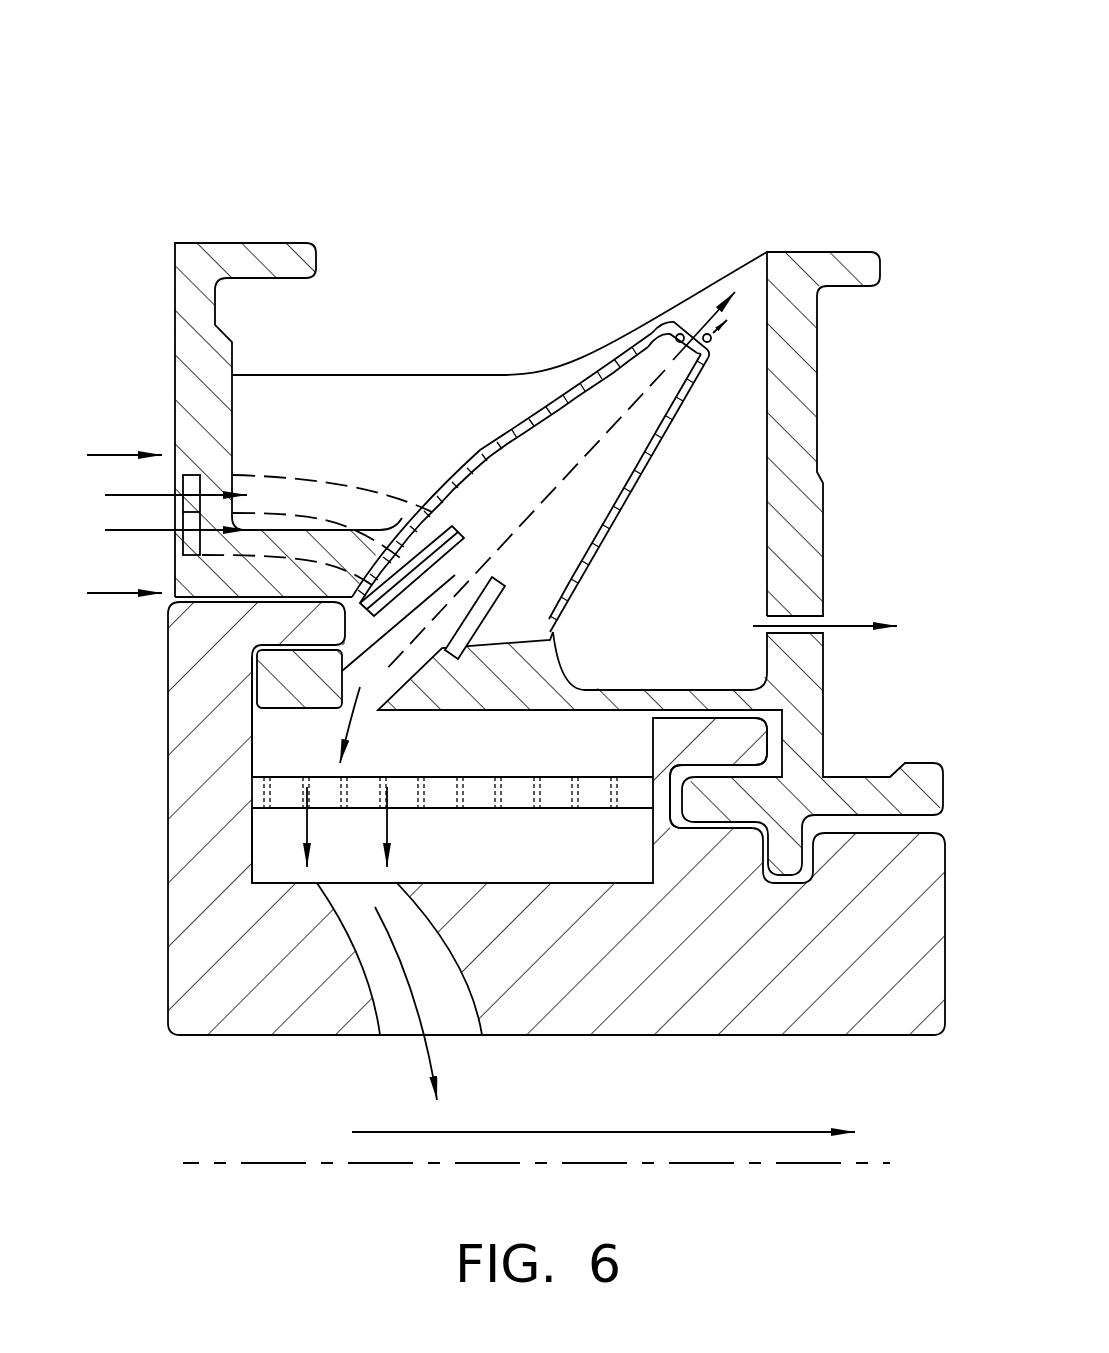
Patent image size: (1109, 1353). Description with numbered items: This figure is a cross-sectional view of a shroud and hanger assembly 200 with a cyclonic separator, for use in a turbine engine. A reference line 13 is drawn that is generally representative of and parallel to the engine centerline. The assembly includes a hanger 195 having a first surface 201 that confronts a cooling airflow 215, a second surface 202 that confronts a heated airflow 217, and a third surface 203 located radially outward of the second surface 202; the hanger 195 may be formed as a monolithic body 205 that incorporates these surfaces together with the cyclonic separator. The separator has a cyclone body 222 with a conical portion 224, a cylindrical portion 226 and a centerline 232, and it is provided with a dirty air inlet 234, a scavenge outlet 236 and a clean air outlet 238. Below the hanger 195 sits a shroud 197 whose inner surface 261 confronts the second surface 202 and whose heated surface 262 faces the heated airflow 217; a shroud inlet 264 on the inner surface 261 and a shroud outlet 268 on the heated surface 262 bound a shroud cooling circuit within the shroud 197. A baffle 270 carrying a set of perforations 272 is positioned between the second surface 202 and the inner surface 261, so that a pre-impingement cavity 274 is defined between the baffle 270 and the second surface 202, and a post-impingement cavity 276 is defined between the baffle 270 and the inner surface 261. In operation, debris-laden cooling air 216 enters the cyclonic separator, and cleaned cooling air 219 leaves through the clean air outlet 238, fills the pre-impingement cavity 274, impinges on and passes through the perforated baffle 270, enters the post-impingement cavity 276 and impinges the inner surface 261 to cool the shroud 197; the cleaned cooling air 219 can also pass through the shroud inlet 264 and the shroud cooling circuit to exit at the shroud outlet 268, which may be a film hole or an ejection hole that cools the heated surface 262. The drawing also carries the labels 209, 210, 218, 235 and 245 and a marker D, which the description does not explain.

The reference line 13 is at (310, 1163).
The hanger 195 is at (186, 170).
The shroud 197 is at (165, 802).
The shroud and hanger assembly 200 is at (773, 75).
The first surface 201 is at (175, 366).
The second surface 202 is at (570, 708).
The third surface 203 is at (585, 378).
The monolithic body 205 is at (838, 246).
The housing wall 209 is at (803, 517).
The outlet slot 210 is at (813, 614).
The cooling airflow 215 is at (102, 455).
The debris-laden cooling air 216 is at (137, 495).
The heated airflow 217 is at (653, 1132).
The outlet flow 218 is at (710, 312).
The cleaned cooling air 219 is at (340, 742).
The cyclone body 222 is at (497, 468).
The conical portion 224 is at (605, 522).
The cylindrical portion 226 is at (525, 645).
The centerline 232 is at (583, 455).
The dirty air inlet 234 is at (430, 530).
The second clamp bar 235 is at (458, 640).
The scavenge outlet 236 is at (707, 343).
The clean air outlet 238 is at (340, 702).
The downstream region 245 is at (987, 683).
The inner surface 261 is at (727, 714).
The heated surface 262 is at (815, 1040).
The shroud inlet 264 is at (378, 711).
The shroud outlet 268 is at (420, 1035).
The baffle 270 is at (525, 800).
The set of perforations 272 is at (537, 778).
The pre-impingement cavity 274 is at (518, 758).
The post-impingement cavity 276 is at (518, 872).
The distance D is at (678, 330).